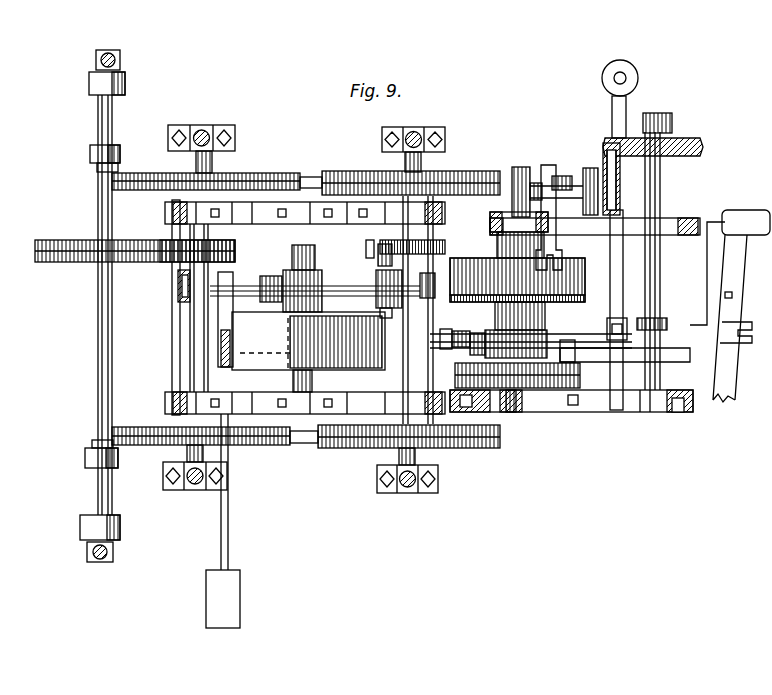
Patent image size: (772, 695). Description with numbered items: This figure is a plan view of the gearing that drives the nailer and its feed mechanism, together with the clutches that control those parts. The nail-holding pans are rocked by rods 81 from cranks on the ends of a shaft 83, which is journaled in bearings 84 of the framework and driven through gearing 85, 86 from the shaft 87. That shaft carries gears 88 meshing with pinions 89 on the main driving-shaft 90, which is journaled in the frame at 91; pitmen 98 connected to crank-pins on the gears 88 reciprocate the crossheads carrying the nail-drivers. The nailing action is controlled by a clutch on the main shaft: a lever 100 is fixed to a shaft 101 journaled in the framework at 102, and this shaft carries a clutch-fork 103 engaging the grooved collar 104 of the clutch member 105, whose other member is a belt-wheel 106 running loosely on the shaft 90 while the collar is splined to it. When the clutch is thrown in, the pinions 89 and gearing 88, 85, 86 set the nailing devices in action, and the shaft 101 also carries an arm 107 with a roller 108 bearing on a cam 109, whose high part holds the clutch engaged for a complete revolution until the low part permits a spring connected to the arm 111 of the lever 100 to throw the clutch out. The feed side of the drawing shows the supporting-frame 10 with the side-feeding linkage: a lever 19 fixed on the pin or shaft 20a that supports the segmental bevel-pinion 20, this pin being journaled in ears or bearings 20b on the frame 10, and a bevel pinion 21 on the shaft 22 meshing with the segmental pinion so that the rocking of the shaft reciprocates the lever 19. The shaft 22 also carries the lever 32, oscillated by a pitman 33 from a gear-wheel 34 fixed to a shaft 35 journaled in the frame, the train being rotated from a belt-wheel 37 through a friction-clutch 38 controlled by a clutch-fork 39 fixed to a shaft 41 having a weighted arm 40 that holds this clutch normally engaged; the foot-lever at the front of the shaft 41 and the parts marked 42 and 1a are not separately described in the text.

The supporting-frame 10 is at (630, 400).
The lever 19 is at (556, 252).
The segmental bevel-pinion 20 is at (606, 158).
The pin or shaft 20a is at (525, 172).
The ears or bearings 20b is at (586, 174).
The shaft 1a is at (556, 189).
The pinion 21 is at (680, 140).
The shaft 22 is at (660, 198).
The lever 32 is at (744, 324).
The pitman 33 is at (642, 358).
The gear-wheel 34 is at (540, 385).
The shaft 35 is at (516, 412).
The belt-wheel 37 is at (517, 271).
The friction-clutch 38 is at (560, 278).
The clutch-fork 39 is at (492, 340).
The weighted arm 40 is at (616, 256).
The shaft 41 is at (606, 338).
The lever 42 is at (730, 306).
The rods 81 is at (110, 58).
The shaft 83 is at (100, 212).
The bearings 84 is at (90, 153).
The gearing 85 is at (80, 260).
The gearing 86 is at (172, 246).
The shaft 87 is at (203, 326).
The gears 88 is at (268, 165).
The pinions 89 is at (307, 176).
The main driving-shaft 90 is at (298, 382).
The frame journal 91 is at (298, 213).
The pitmen 98 is at (205, 130).
The lever 100 is at (226, 319).
The shaft 101 is at (247, 283).
The framework journal 102 is at (178, 283).
The clutch-fork 103 is at (274, 298).
The grooved collar 104 is at (327, 262).
The clutch member 105 is at (308, 341).
The belt-wheel 106 is at (390, 310).
The arm 107 is at (400, 290).
The roller 108 is at (372, 262).
The cam 109 is at (446, 247).
The arm 111 is at (228, 532).